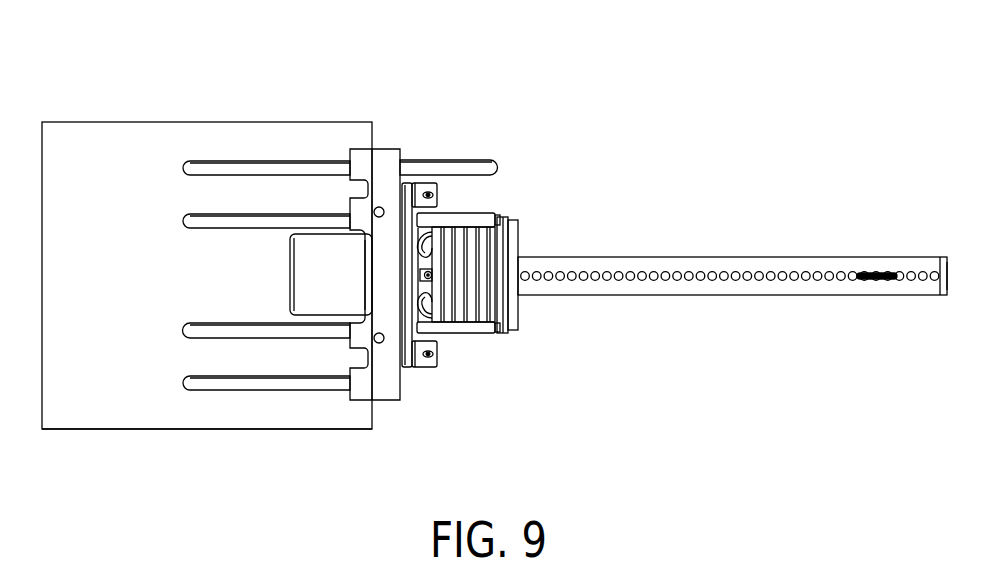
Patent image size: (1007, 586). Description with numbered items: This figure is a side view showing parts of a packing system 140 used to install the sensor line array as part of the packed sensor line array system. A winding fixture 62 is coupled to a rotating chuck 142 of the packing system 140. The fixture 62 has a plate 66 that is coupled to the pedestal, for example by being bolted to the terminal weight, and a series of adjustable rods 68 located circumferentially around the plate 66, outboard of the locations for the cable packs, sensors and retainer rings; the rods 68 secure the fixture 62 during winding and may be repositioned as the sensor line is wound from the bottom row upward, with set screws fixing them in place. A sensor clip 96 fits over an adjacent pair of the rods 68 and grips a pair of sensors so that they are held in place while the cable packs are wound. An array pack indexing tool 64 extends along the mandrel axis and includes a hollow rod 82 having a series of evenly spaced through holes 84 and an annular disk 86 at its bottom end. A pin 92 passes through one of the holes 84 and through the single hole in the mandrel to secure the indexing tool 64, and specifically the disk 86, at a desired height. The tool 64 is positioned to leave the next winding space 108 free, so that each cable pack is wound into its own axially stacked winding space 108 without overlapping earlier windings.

The packing system 140 is at (122, 106).
The rotating chuck 142 is at (133, 430).
The winding fixture 62 is at (415, 99).
The array pack indexing tool 64 is at (732, 264).
The plate 66 is at (386, 158).
The adjustable rods 68 is at (484, 166).
The hollow rod 82 is at (923, 266).
The holes 84 is at (921, 287).
The annular disk 86 is at (520, 228).
The pin 92 is at (880, 270).
The sensor clip 96 is at (406, 272).
The winding space 108 is at (500, 341).